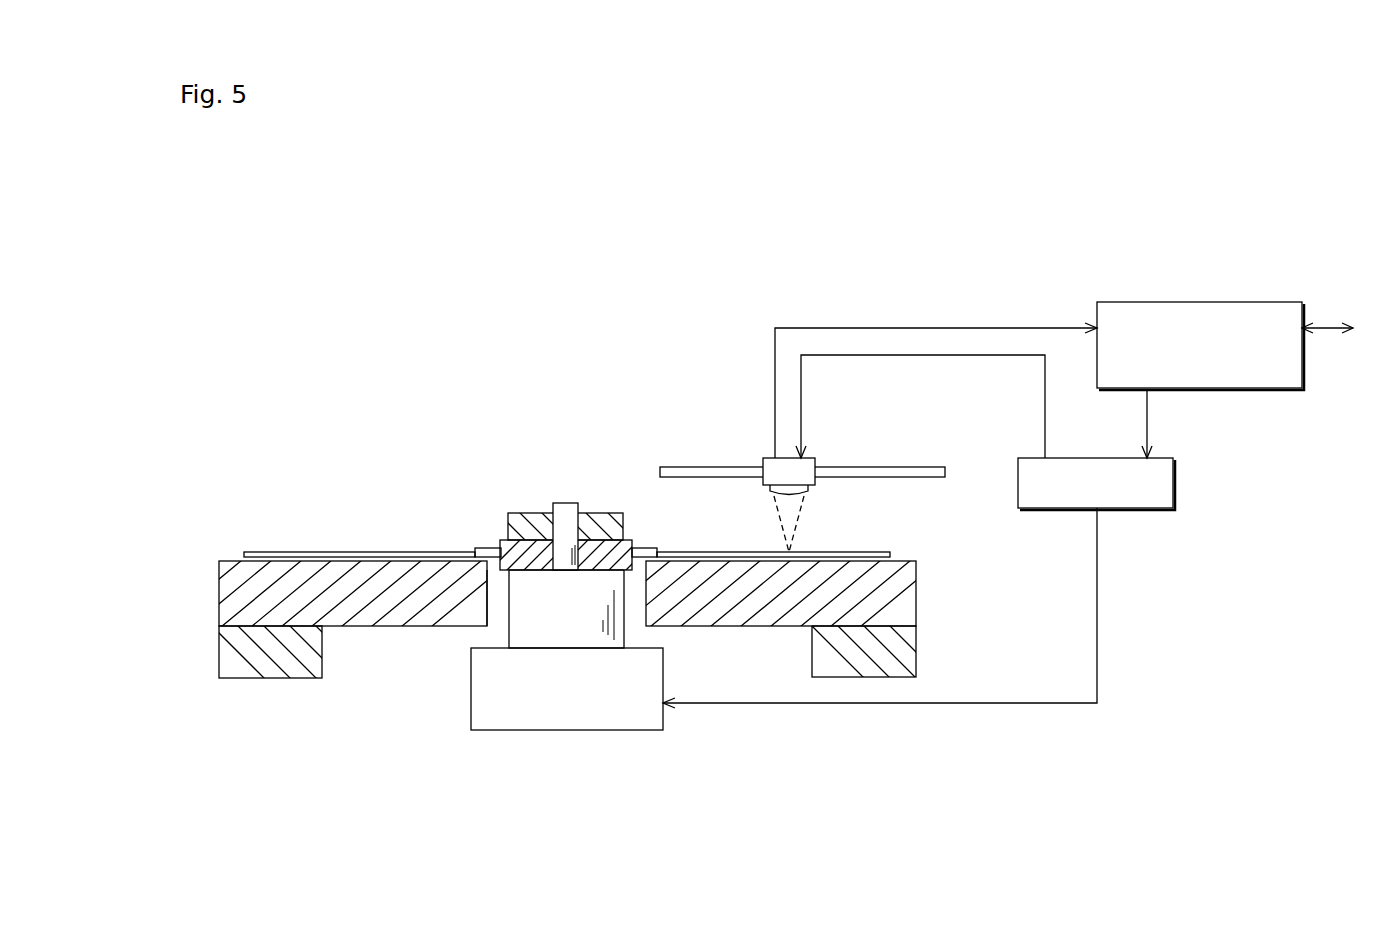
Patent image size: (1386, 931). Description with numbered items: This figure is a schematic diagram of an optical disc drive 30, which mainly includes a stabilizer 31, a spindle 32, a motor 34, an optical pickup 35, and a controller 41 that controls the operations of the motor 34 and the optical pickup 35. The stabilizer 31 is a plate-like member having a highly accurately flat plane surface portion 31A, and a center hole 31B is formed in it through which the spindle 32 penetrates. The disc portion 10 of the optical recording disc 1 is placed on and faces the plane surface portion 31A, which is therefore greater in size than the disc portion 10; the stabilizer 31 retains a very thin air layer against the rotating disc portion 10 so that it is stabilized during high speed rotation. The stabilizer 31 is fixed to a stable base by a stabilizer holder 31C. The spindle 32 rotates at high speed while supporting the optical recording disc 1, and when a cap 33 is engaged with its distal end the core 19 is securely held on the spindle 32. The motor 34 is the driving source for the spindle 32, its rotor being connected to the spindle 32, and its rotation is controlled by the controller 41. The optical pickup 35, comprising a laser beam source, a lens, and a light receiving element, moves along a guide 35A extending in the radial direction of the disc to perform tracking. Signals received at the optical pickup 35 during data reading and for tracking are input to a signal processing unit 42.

The optical recording disc 1 is at (352, 483).
The disc portion 10 is at (398, 552).
The core 19 is at (598, 545).
The optical disc drive 30 is at (428, 398).
The stabilizer 31 is at (902, 591).
The plane surface portion 31A is at (910, 561).
The center hole 31B is at (487, 605).
The stabilizer holder 31C is at (257, 668).
The spindle 32 is at (565, 510).
The cap 33 is at (523, 518).
The motor 34 is at (617, 718).
The optical pickup 35 is at (766, 462).
The guide 35A is at (887, 470).
The controller 41 is at (1173, 476).
The signal processing unit 42 is at (1220, 302).